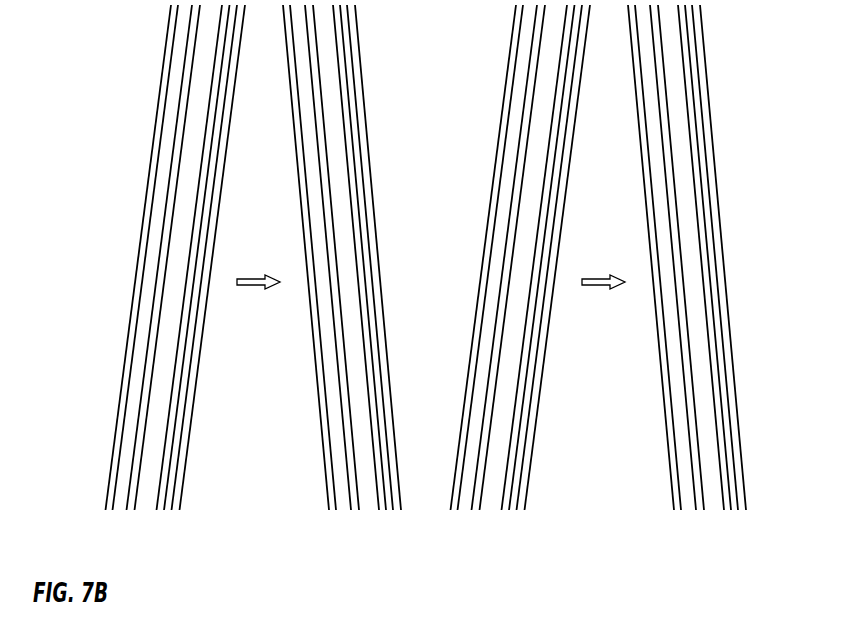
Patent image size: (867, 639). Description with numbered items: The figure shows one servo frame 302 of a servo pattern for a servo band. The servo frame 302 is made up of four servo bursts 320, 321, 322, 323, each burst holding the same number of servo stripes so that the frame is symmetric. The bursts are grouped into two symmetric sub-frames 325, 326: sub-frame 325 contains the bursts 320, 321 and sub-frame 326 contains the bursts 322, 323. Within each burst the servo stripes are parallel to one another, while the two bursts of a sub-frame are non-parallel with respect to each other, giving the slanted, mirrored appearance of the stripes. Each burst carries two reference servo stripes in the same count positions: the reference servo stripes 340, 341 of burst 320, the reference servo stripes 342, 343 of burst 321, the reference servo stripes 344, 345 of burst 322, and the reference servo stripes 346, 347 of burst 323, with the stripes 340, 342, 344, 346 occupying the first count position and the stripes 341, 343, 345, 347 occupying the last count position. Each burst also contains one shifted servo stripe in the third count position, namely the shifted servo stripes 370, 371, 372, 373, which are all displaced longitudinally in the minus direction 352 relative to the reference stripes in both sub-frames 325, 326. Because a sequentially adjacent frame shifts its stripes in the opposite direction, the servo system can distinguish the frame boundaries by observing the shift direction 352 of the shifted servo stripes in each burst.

The servo frame 302 is at (122, 180).
The servo burst 320 is at (178, 515).
The servo burst 321 is at (402, 515).
The servo burst 322 is at (524, 515).
The servo burst 323 is at (746, 515).
The sub-frame 325 is at (402, 554).
The sub-frame 326 is at (746, 554).
The reference servo stripe 340 is at (113, 445).
The reference servo stripe 341 is at (189, 443).
The reference servo stripe 342 is at (326, 478).
The reference servo stripe 343 is at (390, 372).
The reference servo stripe 344 is at (462, 417).
The reference servo stripe 345 is at (534, 443).
The reference servo stripe 346 is at (671, 478).
The reference servo stripe 347 is at (744, 478).
The minus direction 352 is at (253, 289).
The shifted servo stripe 370 is at (183, 373).
The shifted servo stripe 371 is at (370, 405).
The shifted servo stripe 372 is at (528, 373).
The shifted servo stripe 373 is at (715, 405).